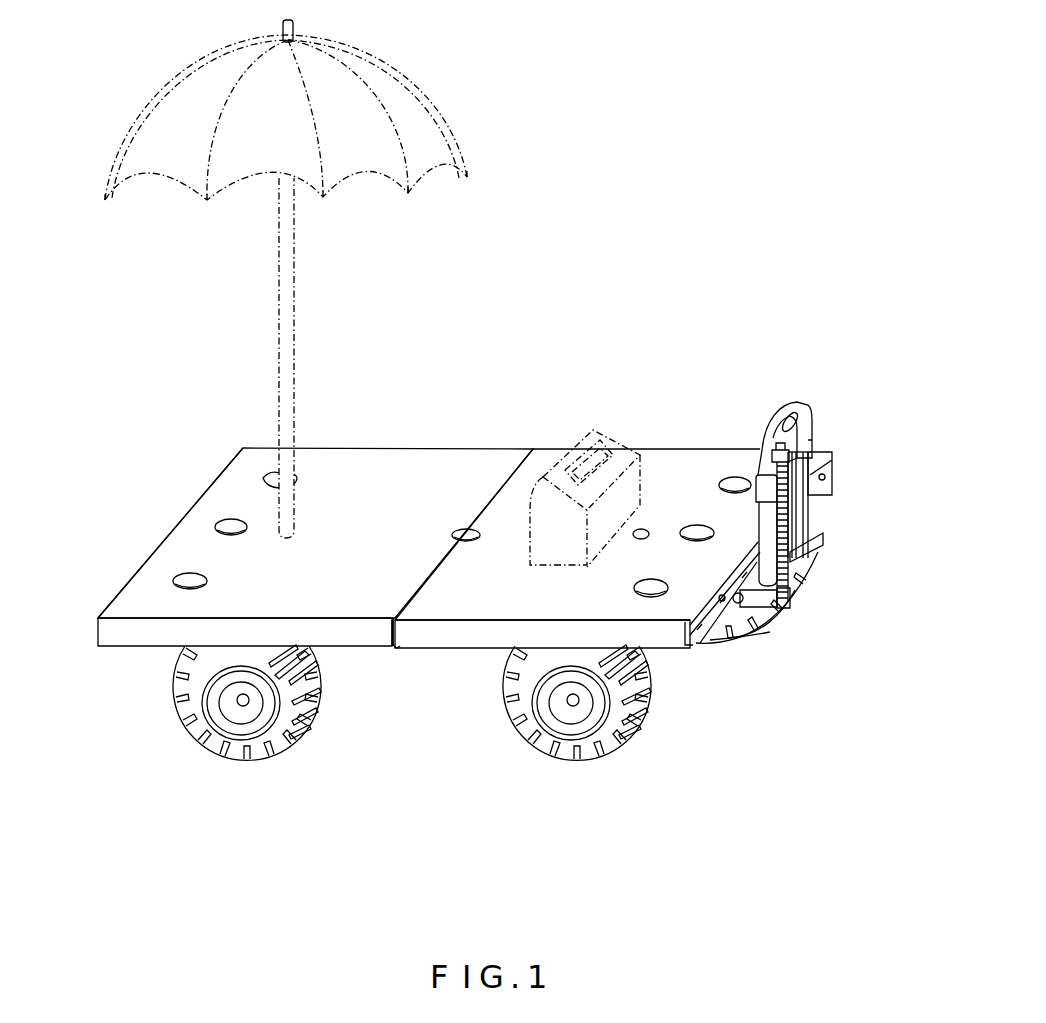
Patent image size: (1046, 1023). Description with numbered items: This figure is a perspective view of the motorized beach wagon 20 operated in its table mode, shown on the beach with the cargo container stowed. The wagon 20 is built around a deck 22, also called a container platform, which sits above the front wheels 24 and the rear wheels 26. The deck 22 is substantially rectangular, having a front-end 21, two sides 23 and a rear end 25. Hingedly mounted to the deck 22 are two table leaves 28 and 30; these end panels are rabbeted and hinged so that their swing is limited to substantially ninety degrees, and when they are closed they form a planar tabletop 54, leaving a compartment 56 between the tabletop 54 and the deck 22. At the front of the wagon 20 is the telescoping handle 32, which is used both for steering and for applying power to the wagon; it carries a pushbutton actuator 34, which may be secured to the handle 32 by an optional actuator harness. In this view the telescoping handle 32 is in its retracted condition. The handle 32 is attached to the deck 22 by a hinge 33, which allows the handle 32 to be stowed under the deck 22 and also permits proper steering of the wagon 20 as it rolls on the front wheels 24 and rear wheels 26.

The motorized beach wagon 20 is at (108, 697).
The front-end 21 is at (700, 640).
The deck 22 is at (772, 625).
The sides 23 is at (468, 449).
The front wheels 24 is at (635, 758).
The rear end 25 is at (180, 535).
The rear wheels 26 is at (210, 752).
The table leaf 28 is at (578, 596).
The table leaf 30 is at (310, 596).
The telescoping handle 32 is at (822, 555).
The hinge 33 is at (735, 640).
The pushbutton actuator 34 is at (782, 440).
The tabletop 54 is at (477, 598).
The compartment 56 is at (362, 643).